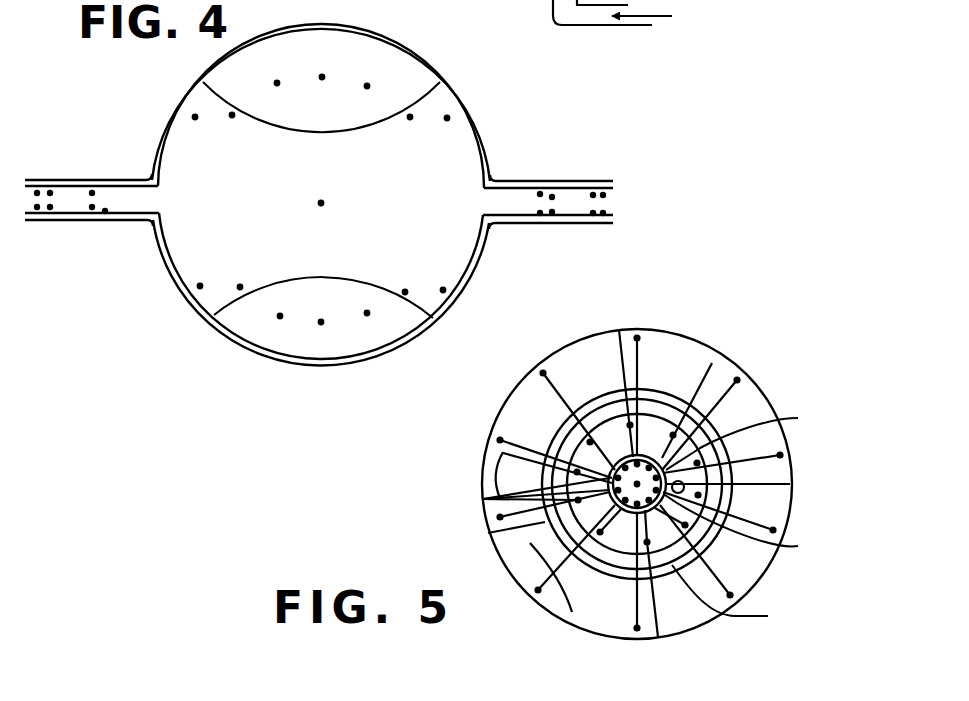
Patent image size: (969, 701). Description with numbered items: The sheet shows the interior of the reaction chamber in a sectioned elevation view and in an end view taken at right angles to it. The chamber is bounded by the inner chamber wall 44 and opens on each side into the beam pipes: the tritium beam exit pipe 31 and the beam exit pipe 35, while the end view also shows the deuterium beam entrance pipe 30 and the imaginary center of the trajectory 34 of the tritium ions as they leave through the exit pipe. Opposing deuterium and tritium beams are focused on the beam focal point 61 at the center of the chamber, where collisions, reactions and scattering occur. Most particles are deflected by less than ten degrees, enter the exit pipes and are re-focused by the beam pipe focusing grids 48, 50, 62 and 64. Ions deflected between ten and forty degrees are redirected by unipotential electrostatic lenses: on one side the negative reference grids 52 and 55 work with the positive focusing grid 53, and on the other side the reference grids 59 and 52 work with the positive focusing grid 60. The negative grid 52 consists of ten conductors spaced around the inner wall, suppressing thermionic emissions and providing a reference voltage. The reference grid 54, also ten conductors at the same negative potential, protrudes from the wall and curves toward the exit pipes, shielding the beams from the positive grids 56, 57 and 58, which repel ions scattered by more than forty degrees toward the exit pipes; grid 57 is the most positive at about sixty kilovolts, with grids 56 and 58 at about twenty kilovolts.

In FIG. 5, the deuterium beam entrance pipe 30 is at (790, 484).
In FIG. 4, the tritium beam exit pipe 31 is at (60, 225).
In FIG. 5, the tritium beam exit pipe 31 is at (668, 462).
In FIG. 5, the imaginary center of the trajectory of the tritium ions 34 is at (661, 466).
In FIG. 4, the beam exit pipe 35 is at (551, 226).
In FIG. 4, the inner chamber wall 44 is at (158, 253).
In FIG. 5, the inner chamber wall 44 is at (484, 420).
In FIG. 4, the beam pipe focusing grid 48 is at (44, 186).
In FIG. 5, the beam pipe focusing grid 48 is at (666, 470).
In FIG. 4, the beam pipe focusing grid 50 is at (103, 184).
In FIG. 5, the beam pipe focusing grid 50 is at (732, 444).
In FIG. 4, the negative grid 52 is at (168, 276).
In FIG. 5, the negative grid 52 is at (483, 499).
In FIG. 4, the positive focusing grid 53 is at (197, 288).
In FIG. 5, the positive focusing grid 53 is at (665, 495).
In FIG. 4, the reference grid 54 is at (222, 320).
In FIG. 5, the reference grid 54 is at (555, 570).
In FIG. 4, the inner reference grid 55 is at (245, 283).
In FIG. 5, the inner reference grid 55 is at (731, 520).
In FIG. 4, the positive grid 56 is at (301, 306).
In FIG. 5, the positive grid 56 is at (672, 565).
In FIG. 4, the positive grid 57 is at (321, 326).
In FIG. 5, the positive grid 57 is at (612, 553).
In FIG. 4, the positive grid 58 is at (366, 314).
In FIG. 5, the positive grid 58 is at (720, 590).
In FIG. 4, the inner reference grid 59 is at (405, 290).
In FIG. 4, the positive focusing grid 60 is at (444, 289).
In FIG. 4, the beam focal point 61 is at (326, 202).
In FIG. 4, the beam pipe focusing grid 62 is at (541, 186).
In FIG. 4, the beam pipe focusing grid 64 is at (605, 186).